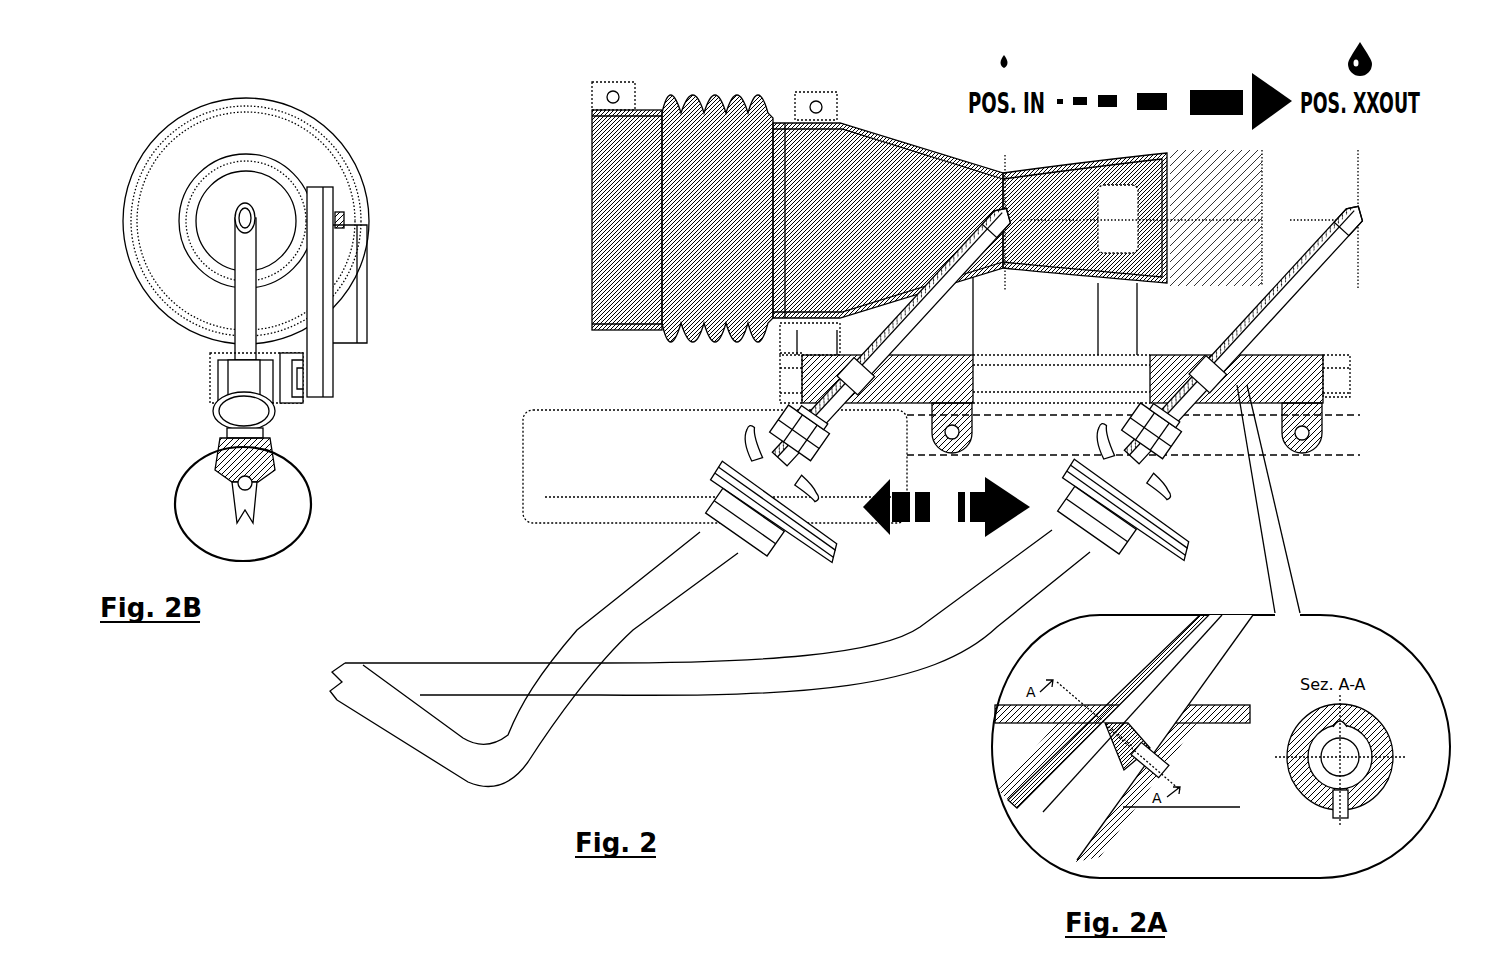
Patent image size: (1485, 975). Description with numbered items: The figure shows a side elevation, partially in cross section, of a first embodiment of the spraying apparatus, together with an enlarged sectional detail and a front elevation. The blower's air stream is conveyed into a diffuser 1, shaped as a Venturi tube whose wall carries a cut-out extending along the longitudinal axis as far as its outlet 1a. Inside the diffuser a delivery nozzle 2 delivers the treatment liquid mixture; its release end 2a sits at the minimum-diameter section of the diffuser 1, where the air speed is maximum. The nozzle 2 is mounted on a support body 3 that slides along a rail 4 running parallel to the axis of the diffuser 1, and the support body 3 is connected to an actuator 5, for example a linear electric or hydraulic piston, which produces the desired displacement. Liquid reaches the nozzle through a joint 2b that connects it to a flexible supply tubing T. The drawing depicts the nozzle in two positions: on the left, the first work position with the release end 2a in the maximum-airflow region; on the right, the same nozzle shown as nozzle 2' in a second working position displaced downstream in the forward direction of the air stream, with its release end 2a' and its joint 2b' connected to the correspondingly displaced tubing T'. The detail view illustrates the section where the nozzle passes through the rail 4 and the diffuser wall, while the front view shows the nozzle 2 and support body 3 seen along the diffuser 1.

In FIG. 2, the diffuser 1 is at (862, 133).
In FIG. 2B, the diffuser 1 is at (296, 108).
In FIG. 2, the outlet 1a is at (1172, 283).
In FIG. 2, the delivery nozzle 2 is at (897, 335).
In FIG. 2B, the delivery nozzle 2 is at (185, 302).
In FIG. 2, the release end 2a is at (1033, 186).
In FIG. 2, the joint 2b is at (775, 510).
In FIG. 2, the second suction tube 2' is at (1246, 333).
In FIG. 2, the second tube inlet end 2a' is at (1402, 221).
In FIG. 2, the second tube outlet fitting 2b' is at (1127, 509).
In FIG. 2, the support body 3 is at (812, 380).
In FIG. 2B, the support body 3 is at (290, 397).
In FIG. 2, the rail 4 is at (1338, 378).
In FIG. 2, the actuator 5 is at (553, 462).
In FIG. 2, the flexible supply tubing T is at (537, 659).
In FIG. 2, the second hose T' is at (710, 648).